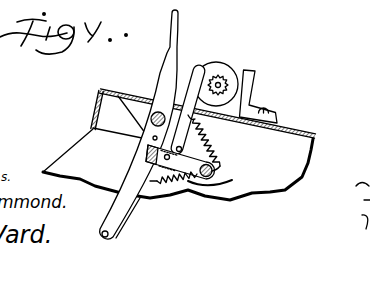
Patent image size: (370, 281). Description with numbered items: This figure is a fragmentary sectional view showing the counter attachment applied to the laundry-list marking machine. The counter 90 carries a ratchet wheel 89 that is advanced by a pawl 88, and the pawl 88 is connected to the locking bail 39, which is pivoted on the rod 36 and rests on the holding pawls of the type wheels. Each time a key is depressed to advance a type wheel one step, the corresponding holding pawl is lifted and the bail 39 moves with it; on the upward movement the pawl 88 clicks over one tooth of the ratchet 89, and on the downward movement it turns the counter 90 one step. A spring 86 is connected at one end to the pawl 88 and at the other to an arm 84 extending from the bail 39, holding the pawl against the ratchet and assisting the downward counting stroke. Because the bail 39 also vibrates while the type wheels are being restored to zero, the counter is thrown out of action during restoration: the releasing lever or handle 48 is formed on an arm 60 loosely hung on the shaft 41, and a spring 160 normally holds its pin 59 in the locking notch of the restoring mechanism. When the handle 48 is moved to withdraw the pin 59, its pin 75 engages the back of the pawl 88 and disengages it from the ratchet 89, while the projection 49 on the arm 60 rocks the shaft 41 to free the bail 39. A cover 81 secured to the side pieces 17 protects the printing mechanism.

The side piece 17 is at (80, 146).
The rod 36 is at (208, 178).
The locking bail 39 is at (91, 133).
The shaft 41 is at (118, 93).
The handle 48 is at (167, 67).
The pin 49 is at (152, 121).
The pin 59 is at (140, 198).
The arm 60 is at (129, 210).
The pin 75 is at (209, 134).
The cover 81 is at (300, 131).
The arm 84 is at (213, 172).
The spring 86 is at (219, 157).
The pawl 88 is at (197, 70).
The ratchet wheel 89 is at (238, 66).
The counter 90 is at (224, 70).
The spring 160 is at (190, 178).